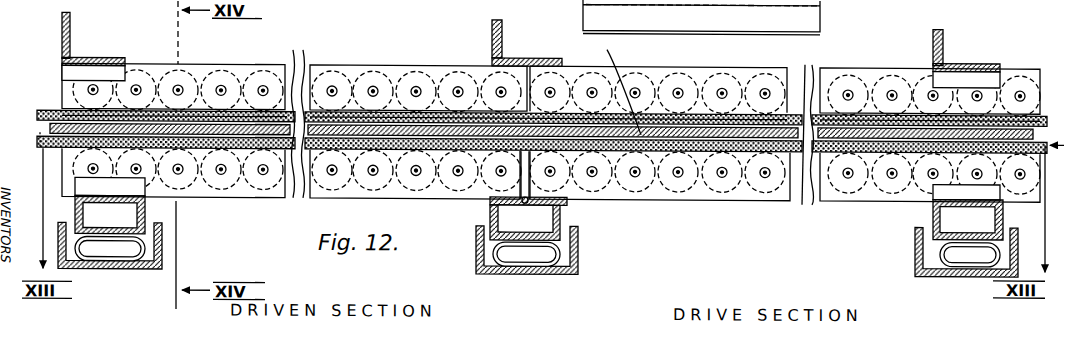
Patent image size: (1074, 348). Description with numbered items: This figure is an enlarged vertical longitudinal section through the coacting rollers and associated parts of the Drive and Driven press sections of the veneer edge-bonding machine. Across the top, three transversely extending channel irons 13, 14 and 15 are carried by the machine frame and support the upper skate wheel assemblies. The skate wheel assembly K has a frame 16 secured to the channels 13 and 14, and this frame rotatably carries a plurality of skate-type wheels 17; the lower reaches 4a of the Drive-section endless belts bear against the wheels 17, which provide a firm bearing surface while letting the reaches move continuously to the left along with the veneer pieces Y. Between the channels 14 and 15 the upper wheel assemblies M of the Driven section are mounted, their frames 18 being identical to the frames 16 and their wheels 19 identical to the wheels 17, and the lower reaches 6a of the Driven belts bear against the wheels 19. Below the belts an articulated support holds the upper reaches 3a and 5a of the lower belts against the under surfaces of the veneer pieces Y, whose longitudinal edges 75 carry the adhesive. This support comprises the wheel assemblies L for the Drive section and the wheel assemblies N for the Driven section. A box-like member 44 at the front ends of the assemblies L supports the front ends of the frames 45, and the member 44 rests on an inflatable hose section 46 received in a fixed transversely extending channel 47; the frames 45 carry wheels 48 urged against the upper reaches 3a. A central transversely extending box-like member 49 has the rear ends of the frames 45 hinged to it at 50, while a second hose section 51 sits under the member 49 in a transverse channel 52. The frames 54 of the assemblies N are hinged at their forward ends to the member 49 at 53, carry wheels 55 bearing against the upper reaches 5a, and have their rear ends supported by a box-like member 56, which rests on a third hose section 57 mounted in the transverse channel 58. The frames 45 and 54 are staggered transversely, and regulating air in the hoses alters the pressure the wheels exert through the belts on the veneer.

The channel iron 13 is at (945, 39).
The channel iron 14 is at (503, 37).
The channel iron 15 is at (70, 31).
The frame 16 is at (708, 64).
The wheel 17 is at (756, 72).
The frame 18 is at (148, 63).
The wheel 19 is at (272, 62).
The upper skate wheel assembly M is at (233, 60).
The wheel assembly N is at (238, 202).
The skate wheel assembly K is at (655, 57).
The wheel assembly L is at (681, 199).
The veneer piece Y is at (46, 128).
The lower reach of endless belt 6a is at (45, 107).
The upper reach of endless belt 5a is at (42, 140).
The lower reach of endless belt 4a is at (800, 125).
The upper reach of endless belt 3a is at (802, 148).
The longitudinal edge 75 is at (614, 88).
The box-like member 44 is at (1003, 214).
The wheel assembly frame 45 is at (738, 193).
The inflatable hose section 46 is at (942, 249).
The transversely extending channel 47 is at (925, 266).
The wheel 48 is at (775, 191).
The central box-like member 49 is at (553, 215).
The hinge connection 50 is at (565, 196).
The second hose section 51 is at (522, 252).
The transversely extending channel 52 is at (578, 244).
The hinge connection 53 is at (478, 194).
The frame 54 is at (193, 190).
The wheel 55 is at (245, 195).
The box-like member 56 is at (137, 215).
The third hose section 57 is at (140, 250).
The transversely extending channel 58 is at (136, 268).